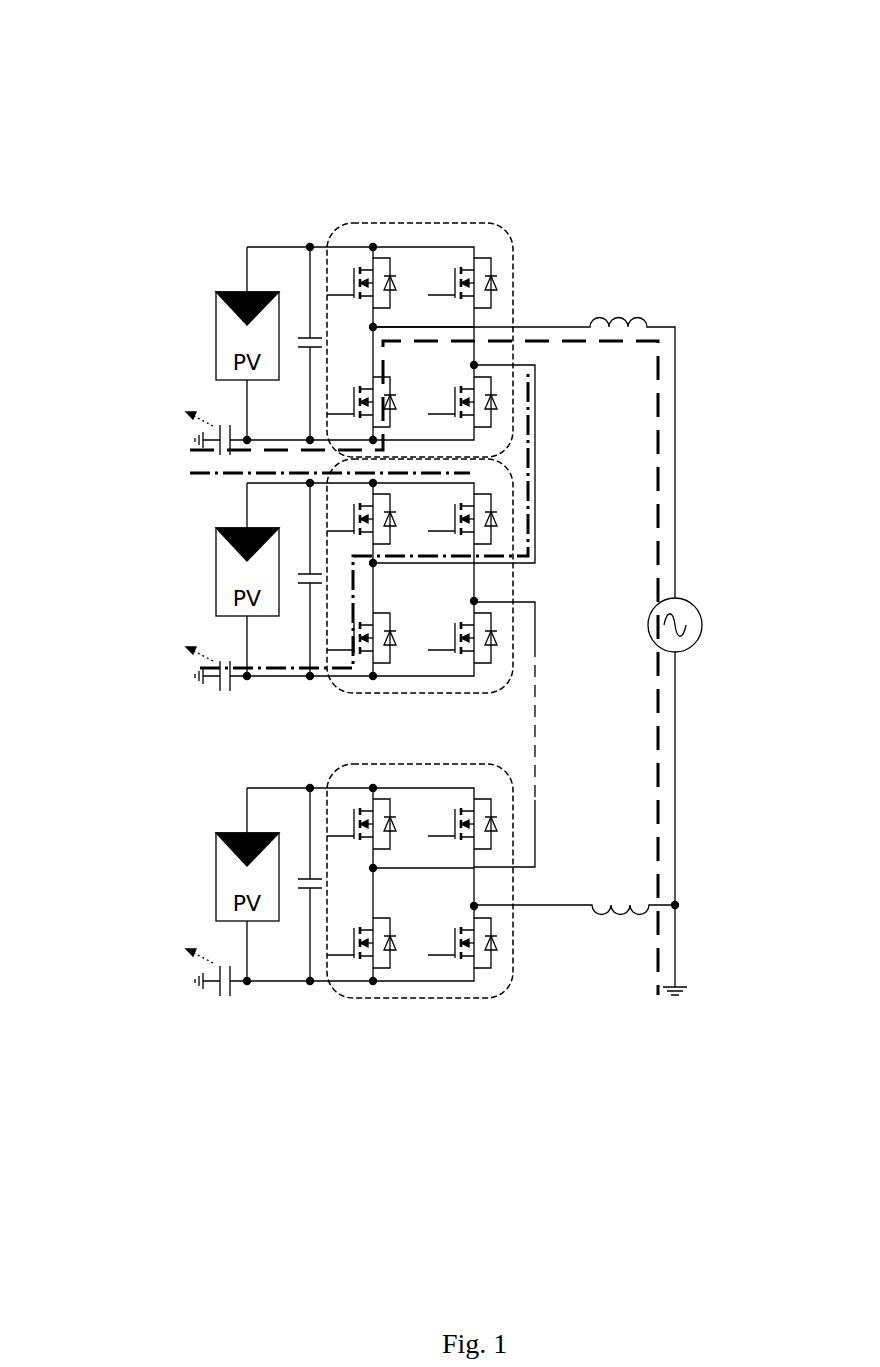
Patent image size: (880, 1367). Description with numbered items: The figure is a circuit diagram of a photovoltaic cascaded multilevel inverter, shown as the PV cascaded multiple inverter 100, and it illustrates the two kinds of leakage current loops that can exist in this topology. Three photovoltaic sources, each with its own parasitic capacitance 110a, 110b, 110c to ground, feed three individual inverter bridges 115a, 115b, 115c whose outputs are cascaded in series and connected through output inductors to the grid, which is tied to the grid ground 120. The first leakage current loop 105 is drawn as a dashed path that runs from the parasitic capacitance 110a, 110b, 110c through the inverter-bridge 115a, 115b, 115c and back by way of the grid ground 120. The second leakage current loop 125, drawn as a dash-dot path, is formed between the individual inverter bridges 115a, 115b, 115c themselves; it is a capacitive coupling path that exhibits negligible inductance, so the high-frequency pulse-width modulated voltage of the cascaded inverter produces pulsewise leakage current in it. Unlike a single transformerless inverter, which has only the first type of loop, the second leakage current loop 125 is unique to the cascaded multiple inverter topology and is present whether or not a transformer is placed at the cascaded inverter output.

The PV cascaded multiple inverter 100 is at (422, 108).
The first leakage current loop 105 is at (663, 500).
The parasitic capacitance 110a is at (94, 405).
The parasitic capacitance 110b is at (91, 650).
The parasitic capacitance 110c is at (91, 935).
The inverter-bridge 115a is at (513, 283).
The inverter-bridge 115b is at (515, 580).
The inverter-bridge 115c is at (513, 983).
The grid ground 120 is at (689, 987).
The second leakage current loop 125 is at (529, 463).